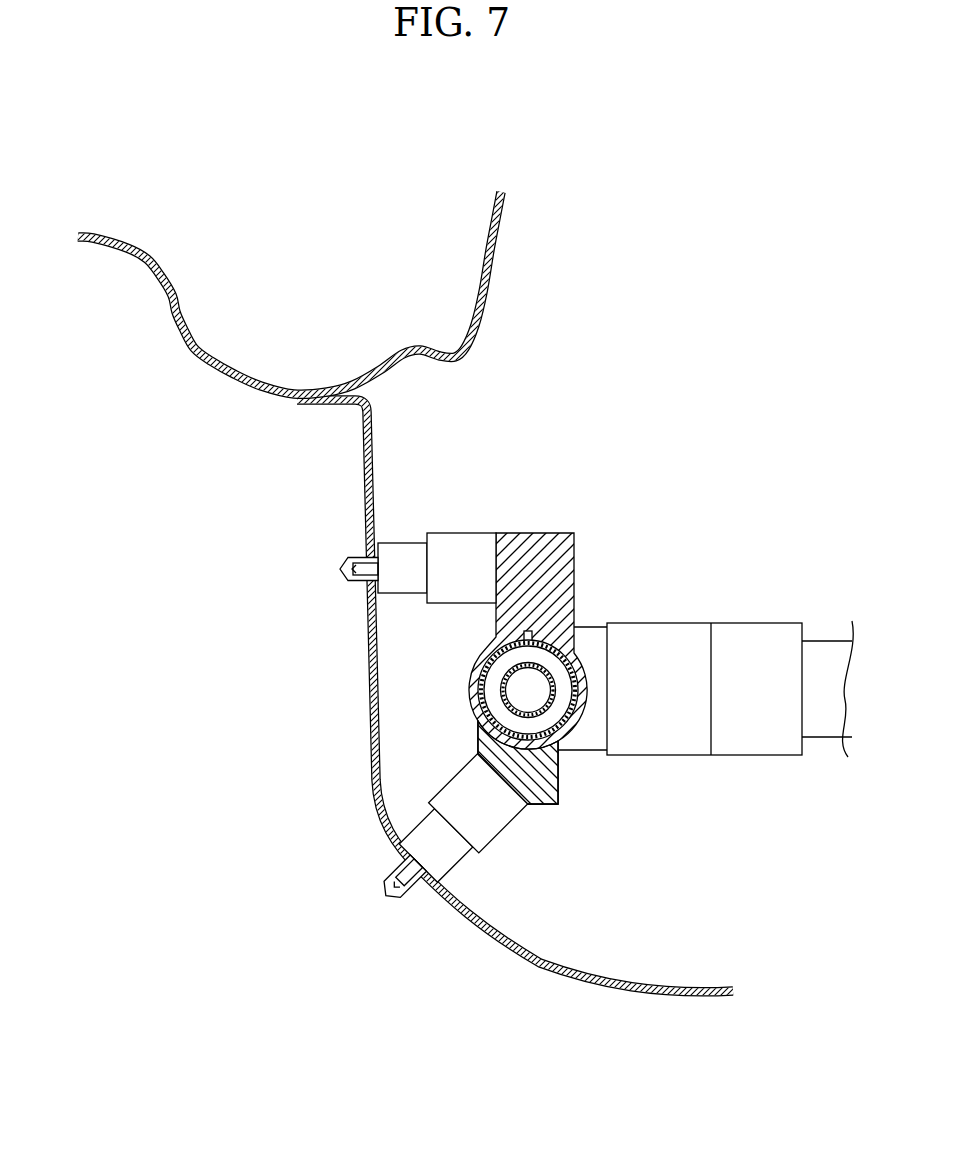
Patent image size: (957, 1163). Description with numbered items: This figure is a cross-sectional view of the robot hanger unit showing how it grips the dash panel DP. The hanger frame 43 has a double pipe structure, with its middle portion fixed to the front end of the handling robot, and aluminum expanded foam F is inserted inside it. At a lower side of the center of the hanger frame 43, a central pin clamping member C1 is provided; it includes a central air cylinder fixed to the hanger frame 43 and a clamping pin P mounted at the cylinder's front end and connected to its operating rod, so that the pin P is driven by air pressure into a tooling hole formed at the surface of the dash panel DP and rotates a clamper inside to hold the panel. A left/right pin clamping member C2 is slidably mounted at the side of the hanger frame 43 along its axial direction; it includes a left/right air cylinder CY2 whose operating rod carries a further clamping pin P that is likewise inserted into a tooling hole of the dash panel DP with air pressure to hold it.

The central pin clamping member C1 is at (498, 799).
The left/right pin clamping member C2 is at (475, 496).
The left/right air cylinder CY2 is at (468, 547).
The hanger frame 43 is at (580, 630).
The aluminum expanded foam F is at (560, 710).
The clamping pin P is at (343, 570).
The dash panel DP is at (652, 995).